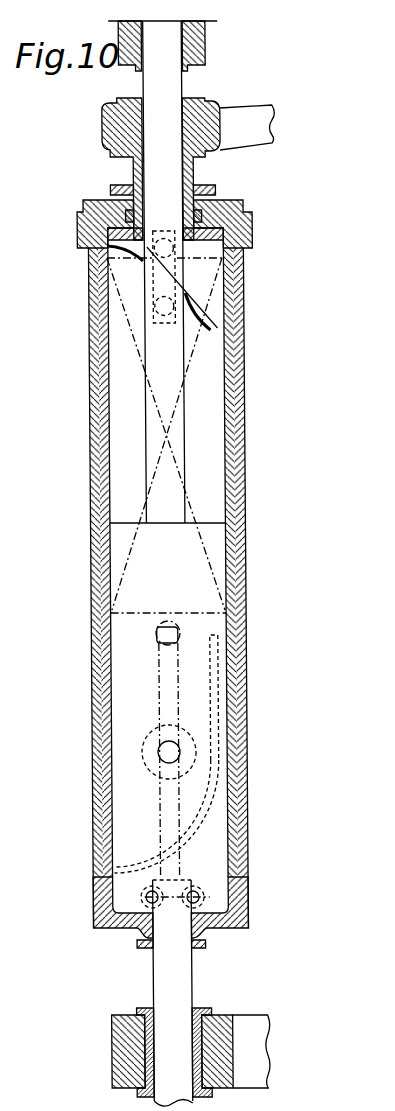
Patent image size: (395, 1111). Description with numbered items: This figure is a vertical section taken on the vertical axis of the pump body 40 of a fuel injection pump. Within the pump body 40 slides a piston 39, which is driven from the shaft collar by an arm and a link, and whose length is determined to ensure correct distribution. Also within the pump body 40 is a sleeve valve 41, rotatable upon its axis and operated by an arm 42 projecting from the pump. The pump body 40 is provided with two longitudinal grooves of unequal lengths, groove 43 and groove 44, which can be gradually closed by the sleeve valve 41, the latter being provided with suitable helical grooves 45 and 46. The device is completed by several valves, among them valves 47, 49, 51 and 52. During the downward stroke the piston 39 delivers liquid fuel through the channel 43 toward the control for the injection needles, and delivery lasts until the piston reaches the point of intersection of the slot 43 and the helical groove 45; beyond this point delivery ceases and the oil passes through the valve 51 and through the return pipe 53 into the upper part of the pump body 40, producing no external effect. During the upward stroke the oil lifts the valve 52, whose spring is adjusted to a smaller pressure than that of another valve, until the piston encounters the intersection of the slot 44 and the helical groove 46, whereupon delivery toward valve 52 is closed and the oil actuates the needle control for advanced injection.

The piston 39 is at (166, 435).
The pump body 40 is at (92, 405).
The sleeve valve 41 is at (220, 368).
The arm 42 is at (189, 169).
The longitudinal groove 43 is at (148, 812).
The longitudinal groove 44 is at (146, 286).
The helical groove 45 is at (202, 820).
The helical groove 46 is at (195, 294).
The valve 47 is at (194, 897).
The valve 49 is at (164, 226).
The valve 51 is at (134, 898).
The valve 52 is at (171, 327).
The return pipe 53 is at (158, 735).